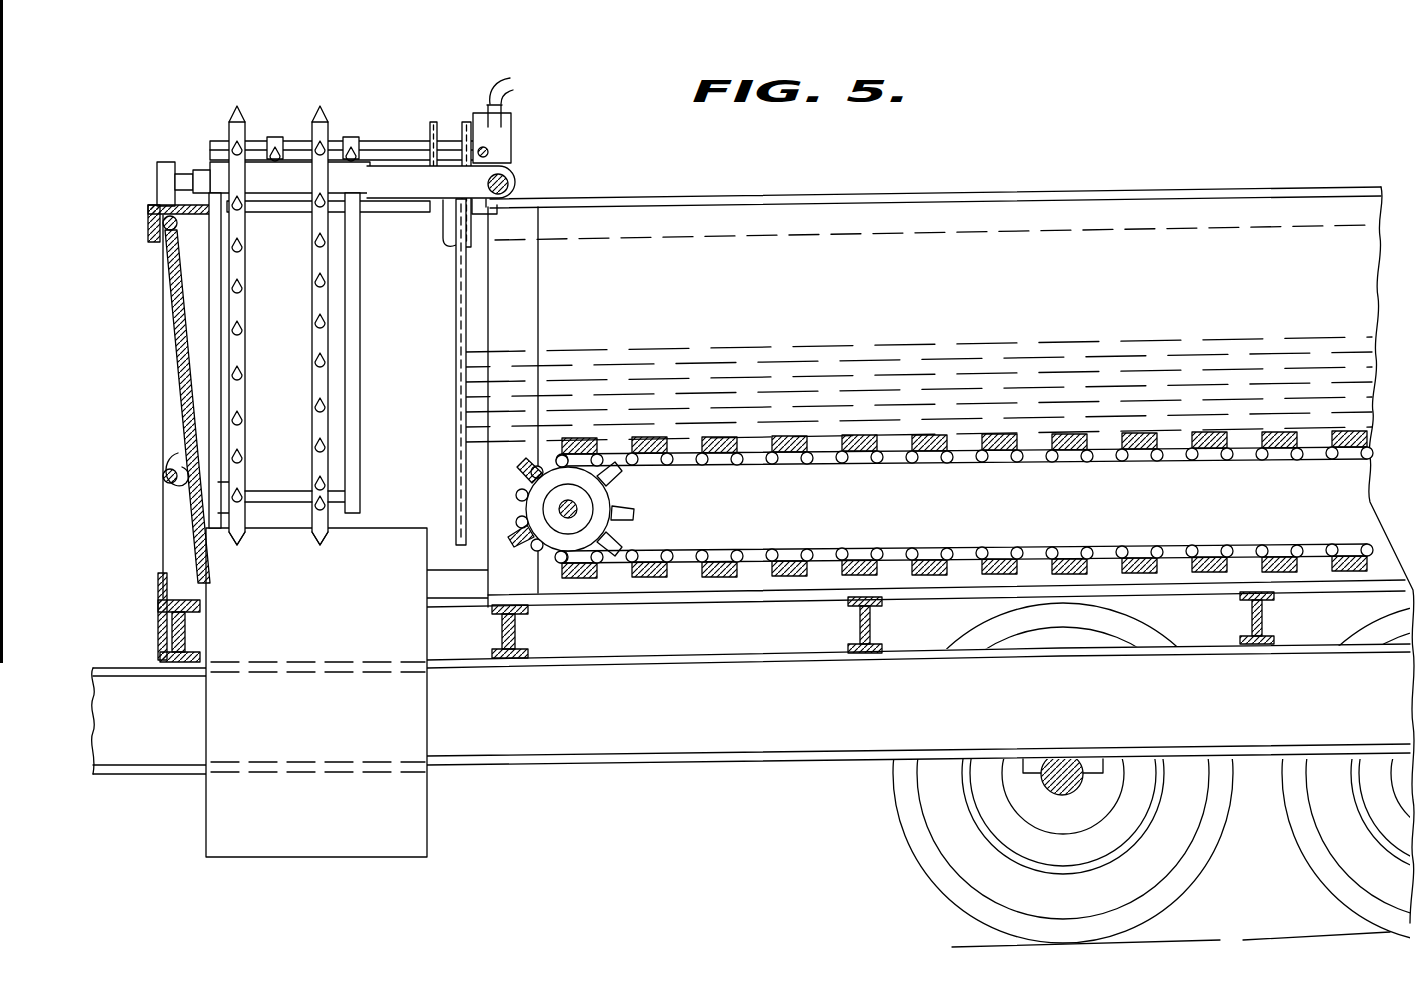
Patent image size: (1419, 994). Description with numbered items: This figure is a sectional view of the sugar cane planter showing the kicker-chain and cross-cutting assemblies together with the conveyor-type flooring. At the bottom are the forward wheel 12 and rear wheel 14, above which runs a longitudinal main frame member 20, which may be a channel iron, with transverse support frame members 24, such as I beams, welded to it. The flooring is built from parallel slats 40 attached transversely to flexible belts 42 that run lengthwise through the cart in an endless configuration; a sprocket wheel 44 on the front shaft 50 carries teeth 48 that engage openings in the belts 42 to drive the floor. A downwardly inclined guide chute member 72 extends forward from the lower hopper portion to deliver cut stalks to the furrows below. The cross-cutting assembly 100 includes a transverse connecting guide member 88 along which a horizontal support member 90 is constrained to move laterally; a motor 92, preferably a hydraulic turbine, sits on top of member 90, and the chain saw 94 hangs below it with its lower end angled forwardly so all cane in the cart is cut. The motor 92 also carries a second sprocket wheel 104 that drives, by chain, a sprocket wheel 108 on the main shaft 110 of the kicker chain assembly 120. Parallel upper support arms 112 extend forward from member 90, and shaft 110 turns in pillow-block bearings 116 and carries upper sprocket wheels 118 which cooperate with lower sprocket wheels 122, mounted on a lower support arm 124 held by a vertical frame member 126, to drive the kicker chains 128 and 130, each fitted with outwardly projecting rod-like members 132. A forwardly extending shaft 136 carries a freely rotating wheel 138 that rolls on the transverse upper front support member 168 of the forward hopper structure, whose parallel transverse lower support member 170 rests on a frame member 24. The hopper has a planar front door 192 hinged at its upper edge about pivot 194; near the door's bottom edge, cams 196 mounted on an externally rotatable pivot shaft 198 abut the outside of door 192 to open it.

The forward wheel 12 is at (913, 870).
The rear wheel 14 is at (1318, 878).
The main frame member 20 is at (675, 768).
The support frame member 24 is at (835, 625).
The slat 40 is at (1005, 546).
The flexible belt 42 is at (944, 504).
The sprocket wheel 44 is at (623, 507).
The tooth 48 is at (600, 480).
The front shaft 50 is at (577, 509).
The guide chute member 72 is at (429, 822).
The transverse connecting guide member 88 is at (510, 184).
The horizontal support member 90 is at (410, 205).
The motor 92 is at (512, 118).
The chain saw 94 is at (448, 340).
The cross-cutting assembly 100 is at (567, 102).
The second sprocket wheel 104 is at (464, 135).
The sprocket wheel 108 is at (432, 150).
The main shaft 110 is at (385, 147).
The upper support arm 112 is at (200, 165).
The pillow-block bearing 116 is at (345, 143).
The upper sprocket wheel 118 is at (272, 138).
The kicker chain assembly 120 is at (155, 100).
The lower sprocket wheel 122 is at (245, 518).
The lower support arm 124 is at (268, 498).
The vertical frame member 126 is at (360, 436).
The kicker chain 128 is at (245, 265).
The kicker chain 130 is at (313, 385).
The rod-like member 132 is at (313, 247).
The shaft 136 is at (178, 176).
The wheel 138 is at (157, 182).
The transverse upper front support member 168 is at (148, 228).
The transverse lower support member 170 is at (158, 588).
The front door 192 is at (168, 335).
The pivot 194 is at (170, 230).
The cam 196 is at (175, 462).
The pivot shaft 198 is at (165, 478).